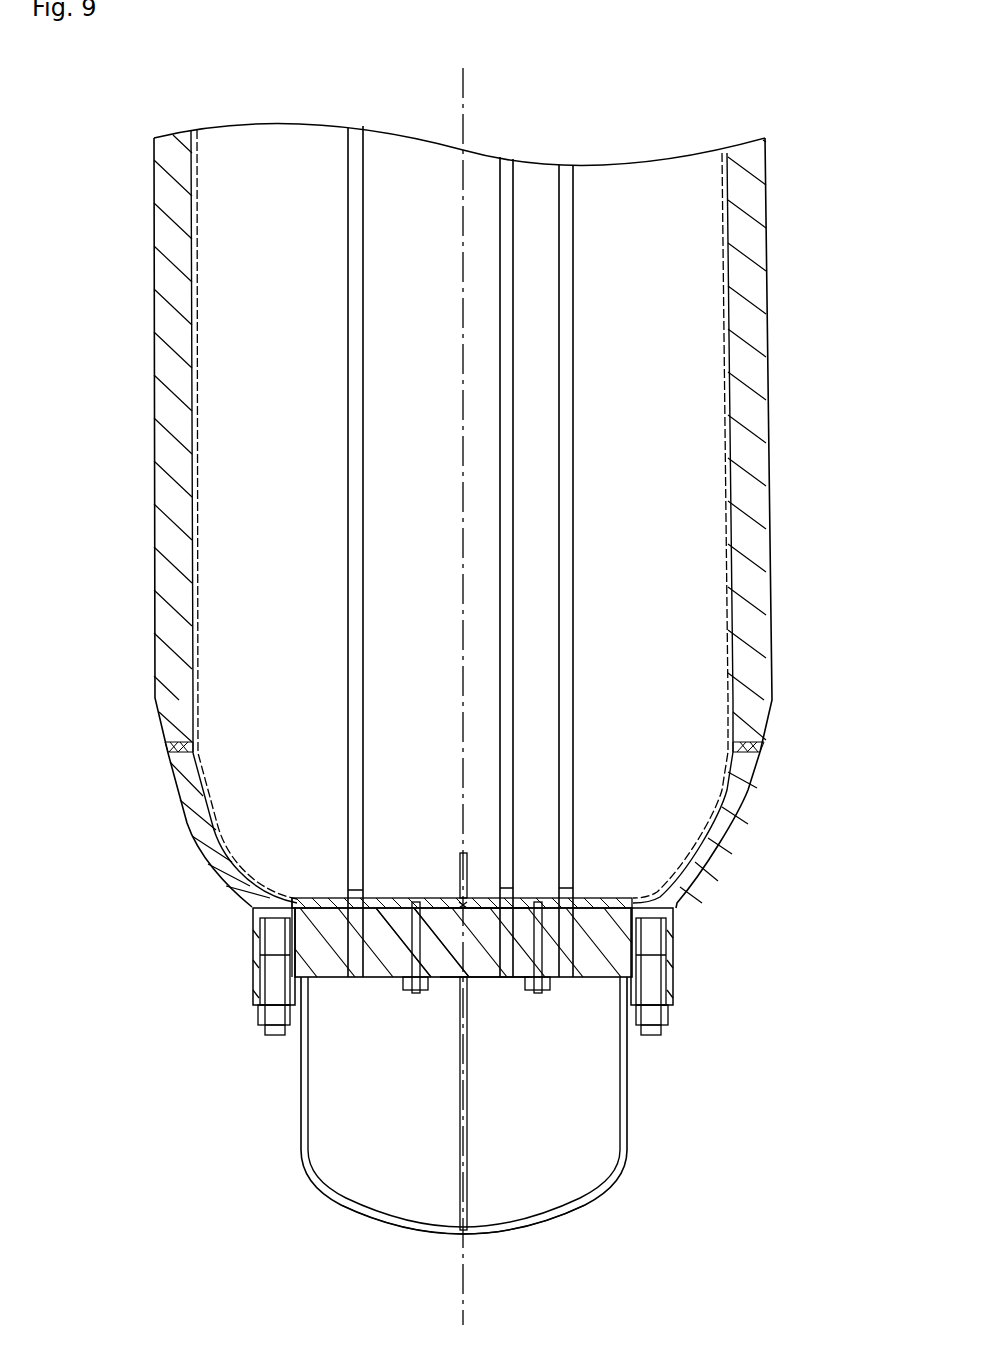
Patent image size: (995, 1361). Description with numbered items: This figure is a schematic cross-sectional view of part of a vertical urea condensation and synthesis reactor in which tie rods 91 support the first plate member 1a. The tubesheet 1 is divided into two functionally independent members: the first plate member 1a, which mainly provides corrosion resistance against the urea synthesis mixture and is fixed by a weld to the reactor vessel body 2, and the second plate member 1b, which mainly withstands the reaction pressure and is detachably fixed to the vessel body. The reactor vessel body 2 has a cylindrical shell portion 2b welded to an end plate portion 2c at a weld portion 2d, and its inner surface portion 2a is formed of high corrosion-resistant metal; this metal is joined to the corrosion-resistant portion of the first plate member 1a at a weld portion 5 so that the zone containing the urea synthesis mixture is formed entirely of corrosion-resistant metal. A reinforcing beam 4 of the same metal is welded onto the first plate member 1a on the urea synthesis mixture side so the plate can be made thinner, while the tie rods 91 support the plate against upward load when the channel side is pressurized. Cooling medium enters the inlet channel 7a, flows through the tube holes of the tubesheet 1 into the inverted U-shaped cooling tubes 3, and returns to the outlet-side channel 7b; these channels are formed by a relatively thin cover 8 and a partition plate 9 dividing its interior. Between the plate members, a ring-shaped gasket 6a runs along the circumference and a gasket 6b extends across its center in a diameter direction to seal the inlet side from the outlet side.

The tubesheet 1 is at (455, 1030).
The first plate member 1a is at (408, 912).
The second plate member 1b is at (435, 958).
The reactor vessel body 2 is at (100, 593).
The inner surface portion 2a is at (160, 617).
The cylindrical shell portion 2b is at (165, 676).
The end plate portion 2c is at (185, 786).
The weld portion 2d is at (178, 748).
The inverted U-shaped cooling tubes 3 is at (346, 668).
The reinforcing beam 4 is at (461, 870).
The weld portion 5 is at (296, 904).
The ring-shaped gasket 6a is at (326, 956).
The gasket 6b is at (483, 926).
The inlet channel 7a is at (548, 1185).
The outlet-side channel 7b is at (398, 1185).
The cover 8 is at (612, 1180).
The partition plate 9 is at (468, 1145).
The tie rods 91 is at (537, 995).